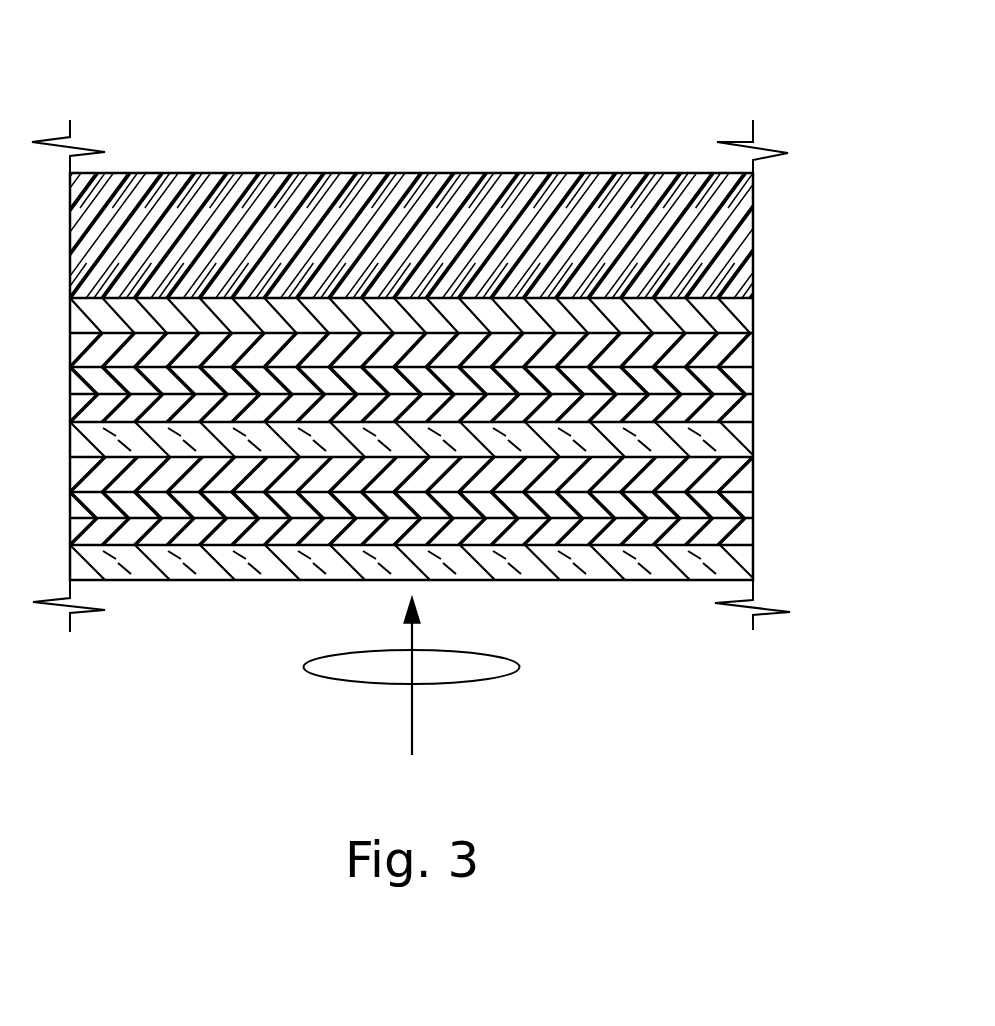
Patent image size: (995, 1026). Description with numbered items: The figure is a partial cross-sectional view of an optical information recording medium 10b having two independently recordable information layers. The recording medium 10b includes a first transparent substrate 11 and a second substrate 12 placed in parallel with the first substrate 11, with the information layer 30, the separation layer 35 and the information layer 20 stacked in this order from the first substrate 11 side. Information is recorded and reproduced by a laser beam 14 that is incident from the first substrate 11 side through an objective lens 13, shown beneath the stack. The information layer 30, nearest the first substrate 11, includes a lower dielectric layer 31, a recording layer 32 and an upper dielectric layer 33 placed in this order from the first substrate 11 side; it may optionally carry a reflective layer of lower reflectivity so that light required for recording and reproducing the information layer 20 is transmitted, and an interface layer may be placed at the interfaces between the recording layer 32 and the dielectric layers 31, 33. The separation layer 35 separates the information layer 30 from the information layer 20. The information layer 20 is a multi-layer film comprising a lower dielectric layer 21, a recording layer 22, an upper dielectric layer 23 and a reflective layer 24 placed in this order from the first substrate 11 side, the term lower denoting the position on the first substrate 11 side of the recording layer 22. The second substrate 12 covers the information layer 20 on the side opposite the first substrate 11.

The optical information recording medium 10b is at (84, 104).
The first transparent substrate 11 is at (753, 565).
The second substrate 12 is at (753, 235).
The objective lens 13 is at (519, 666).
The laser beam 14 is at (412, 738).
The information layer 20 is at (477, 357).
The lower dielectric layer 21 is at (448, 402).
The recording layer 22 is at (753, 382).
The upper dielectric layer 23 is at (753, 350).
The reflective layer 24 is at (753, 317).
The information layer 30 is at (477, 495).
The lower dielectric layer 31 is at (448, 526).
The recording layer 32 is at (753, 500).
The upper dielectric layer 33 is at (753, 470).
The separation layer 35 is at (753, 437).